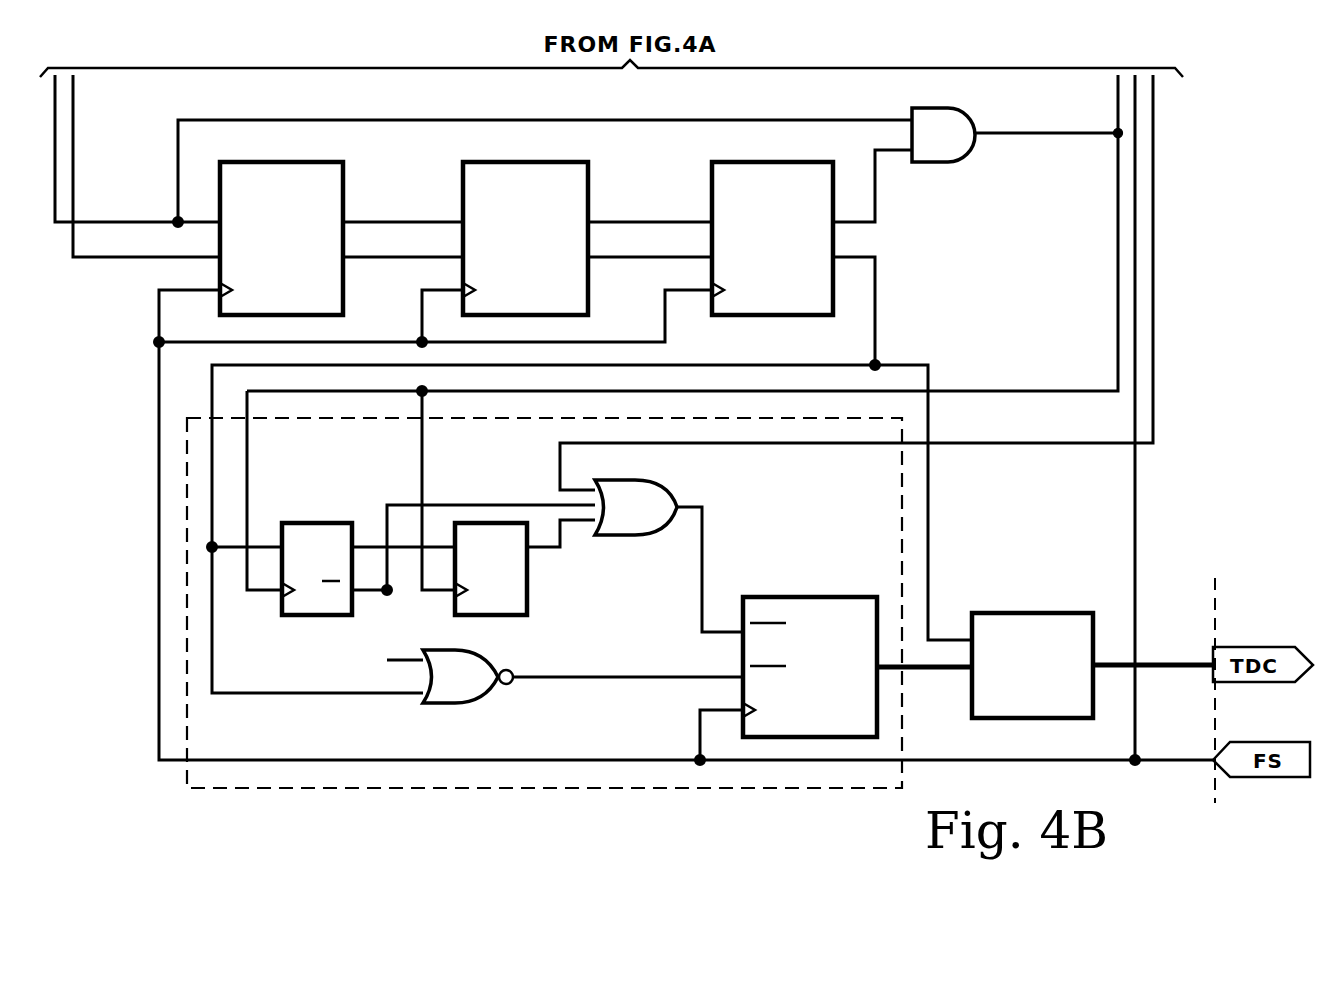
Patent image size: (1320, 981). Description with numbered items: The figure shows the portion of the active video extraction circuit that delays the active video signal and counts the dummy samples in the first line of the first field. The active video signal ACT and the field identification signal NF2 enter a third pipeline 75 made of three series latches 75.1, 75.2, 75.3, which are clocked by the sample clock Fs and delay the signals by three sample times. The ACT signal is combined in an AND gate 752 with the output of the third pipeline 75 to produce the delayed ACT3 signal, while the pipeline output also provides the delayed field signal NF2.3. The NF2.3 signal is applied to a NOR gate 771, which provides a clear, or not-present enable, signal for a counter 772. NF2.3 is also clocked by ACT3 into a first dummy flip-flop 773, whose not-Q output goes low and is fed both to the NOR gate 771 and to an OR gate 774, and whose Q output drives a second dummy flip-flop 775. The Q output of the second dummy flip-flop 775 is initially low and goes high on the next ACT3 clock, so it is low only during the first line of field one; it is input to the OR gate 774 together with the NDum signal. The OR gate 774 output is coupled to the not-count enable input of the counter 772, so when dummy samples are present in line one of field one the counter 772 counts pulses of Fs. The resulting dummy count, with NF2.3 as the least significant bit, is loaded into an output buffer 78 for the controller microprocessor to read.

The third pipeline 75 is at (530, 219).
The latch 75.1 is at (343, 190).
The latch 75.2 is at (588, 190).
The latch 75.3 is at (752, 316).
The AND gate 752 is at (938, 163).
The NOR gate 771 is at (455, 705).
The counter 772 is at (765, 597).
The first dummy flip-flop 773 is at (333, 523).
The OR gate 774 is at (660, 492).
The second dummy flip-flop 775 is at (535, 565).
The output buffer 78 is at (995, 613).